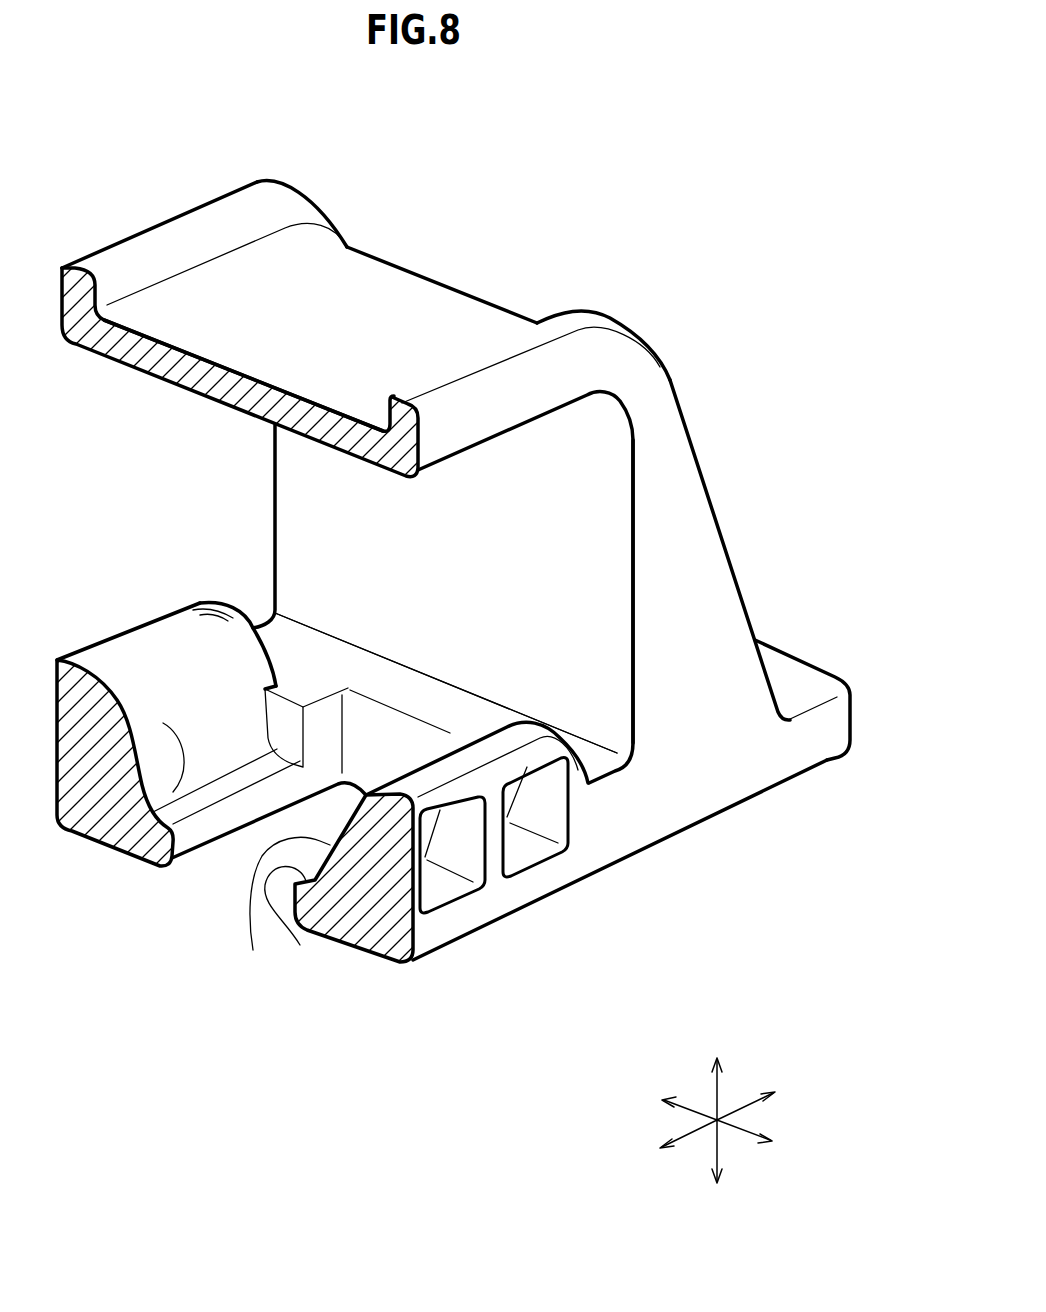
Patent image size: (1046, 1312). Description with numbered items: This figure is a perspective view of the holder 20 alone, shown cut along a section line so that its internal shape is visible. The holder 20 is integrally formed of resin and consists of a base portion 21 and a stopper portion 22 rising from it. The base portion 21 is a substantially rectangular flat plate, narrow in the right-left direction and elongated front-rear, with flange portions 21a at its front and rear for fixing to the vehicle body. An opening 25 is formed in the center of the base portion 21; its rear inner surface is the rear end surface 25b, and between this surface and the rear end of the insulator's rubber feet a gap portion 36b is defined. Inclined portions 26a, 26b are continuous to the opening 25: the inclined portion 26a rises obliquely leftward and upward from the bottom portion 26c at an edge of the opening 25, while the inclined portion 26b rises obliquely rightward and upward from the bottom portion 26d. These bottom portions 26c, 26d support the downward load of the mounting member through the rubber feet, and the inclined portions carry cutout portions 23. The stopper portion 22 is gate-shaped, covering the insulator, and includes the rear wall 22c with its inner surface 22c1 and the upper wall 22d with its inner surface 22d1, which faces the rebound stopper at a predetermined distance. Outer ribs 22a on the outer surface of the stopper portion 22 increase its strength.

The holder 20 is at (462, 674).
The base portion 21 is at (743, 767).
The flange portion 21a is at (800, 680).
The stopper portion 22 is at (423, 287).
The outer rib 22a is at (225, 198).
The rear wall 22c is at (617, 437).
The inner surface of the rear wall 22c1 is at (600, 510).
The upper wall 22d is at (160, 360).
The inner surface of the upper wall 22d1 is at (205, 395).
The cutout portion 23 is at (437, 892).
The opening 25 is at (200, 850).
The rear end surface of the opening 25b is at (407, 728).
The inclined portion 26a is at (105, 822).
The inclined portion 26b is at (253, 950).
The bottom portion 26c is at (243, 825).
The bottom portion 26d is at (300, 945).
The gap portion 36b is at (383, 724).